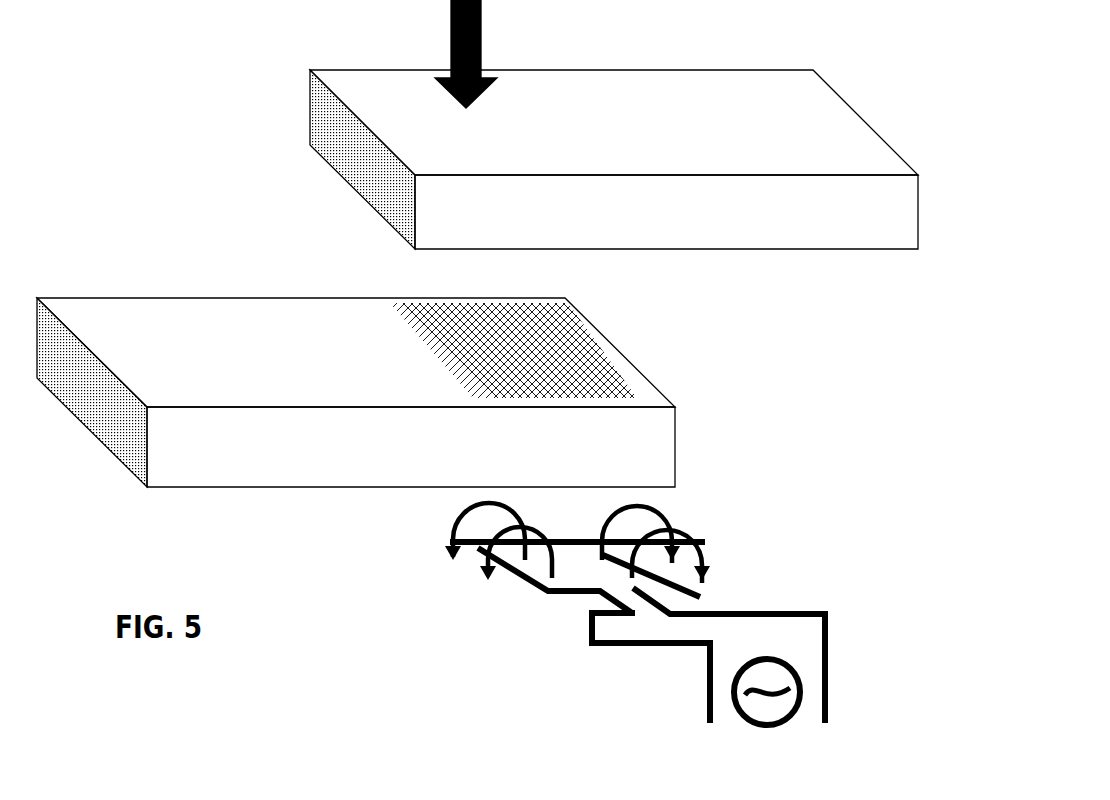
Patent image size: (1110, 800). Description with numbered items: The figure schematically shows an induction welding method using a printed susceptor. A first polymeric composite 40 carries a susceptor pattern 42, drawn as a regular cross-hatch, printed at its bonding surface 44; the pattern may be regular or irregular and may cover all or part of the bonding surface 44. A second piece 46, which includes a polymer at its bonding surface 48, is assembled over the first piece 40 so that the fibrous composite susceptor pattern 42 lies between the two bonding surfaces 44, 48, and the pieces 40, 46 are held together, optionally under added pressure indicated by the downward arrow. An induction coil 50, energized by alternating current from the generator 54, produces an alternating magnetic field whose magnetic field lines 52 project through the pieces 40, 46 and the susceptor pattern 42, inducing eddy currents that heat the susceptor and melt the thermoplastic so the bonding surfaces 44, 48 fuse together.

The first polymeric composite 40 is at (369, 392).
The susceptor pattern 42 is at (568, 353).
The bonding surface 44 is at (627, 398).
The second piece 46 is at (832, 216).
The bonding surface 48 is at (536, 256).
The induction coil 50 is at (540, 587).
The magnetic field lines 52 is at (675, 522).
The generator 54 is at (777, 723).